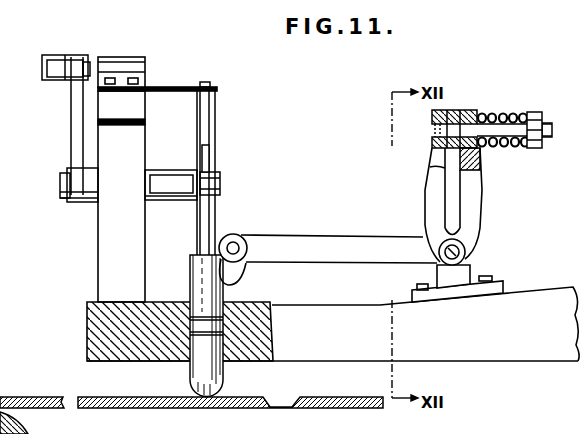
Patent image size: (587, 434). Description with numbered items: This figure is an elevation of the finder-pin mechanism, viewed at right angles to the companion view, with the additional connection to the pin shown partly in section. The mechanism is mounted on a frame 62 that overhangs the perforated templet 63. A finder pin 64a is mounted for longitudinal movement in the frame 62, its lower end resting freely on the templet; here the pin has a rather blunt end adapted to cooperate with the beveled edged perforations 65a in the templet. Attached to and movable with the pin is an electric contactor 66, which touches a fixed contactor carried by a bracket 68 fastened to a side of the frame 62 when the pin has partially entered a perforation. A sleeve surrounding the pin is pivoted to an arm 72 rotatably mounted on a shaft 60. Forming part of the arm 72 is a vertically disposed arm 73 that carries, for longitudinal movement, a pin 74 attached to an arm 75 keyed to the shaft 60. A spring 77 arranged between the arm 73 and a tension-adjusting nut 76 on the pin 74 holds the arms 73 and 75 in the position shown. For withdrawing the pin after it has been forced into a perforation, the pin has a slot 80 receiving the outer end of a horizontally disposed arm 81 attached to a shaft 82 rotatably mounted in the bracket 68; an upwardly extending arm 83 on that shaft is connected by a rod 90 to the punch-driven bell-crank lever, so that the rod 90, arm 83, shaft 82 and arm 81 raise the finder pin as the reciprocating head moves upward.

The shaft 60 is at (462, 252).
The frame 62 is at (507, 350).
The perforated templet 63 is at (15, 398).
The finder pin 64a is at (192, 377).
The beveled edged perforations 65a is at (327, 386).
The electric contactor 66 is at (133, 57).
The bracket 68 is at (98, 240).
The arm 72 is at (300, 234).
The vertically disposed arm 73 is at (479, 198).
The pin 74 is at (490, 132).
The arm 75 is at (424, 183).
The tension-adjusting nut 76 is at (540, 115).
The spring 77 is at (503, 146).
The slot 80 is at (208, 153).
The horizontally disposed arm 81 is at (220, 180).
The shaft 82 is at (60, 192).
The upwardly extending arm 83 is at (72, 124).
The rod 90 is at (53, 55).